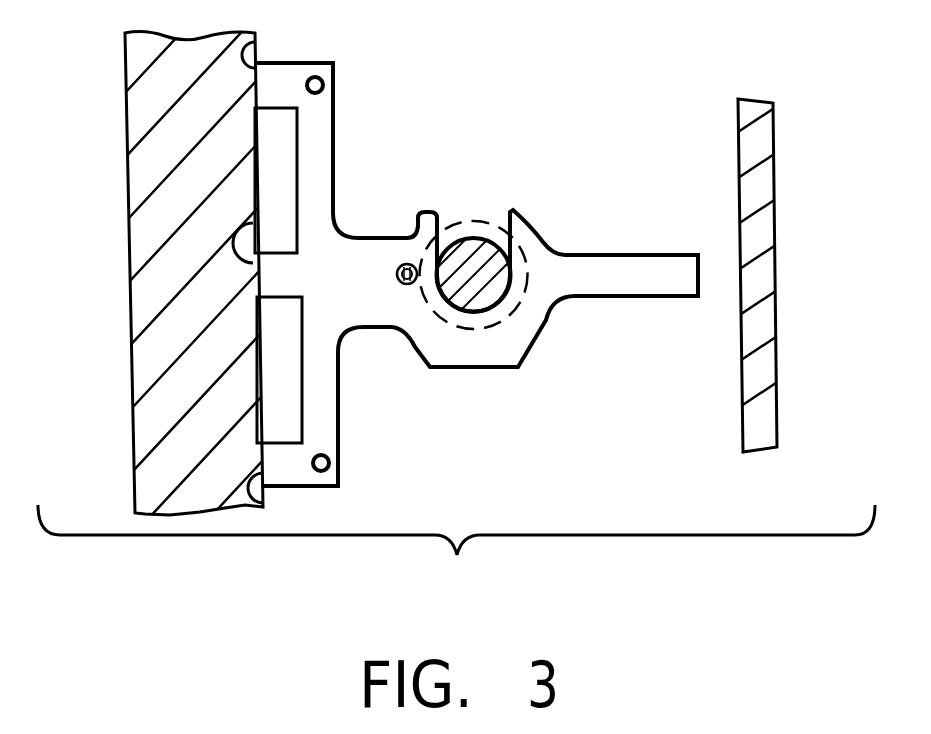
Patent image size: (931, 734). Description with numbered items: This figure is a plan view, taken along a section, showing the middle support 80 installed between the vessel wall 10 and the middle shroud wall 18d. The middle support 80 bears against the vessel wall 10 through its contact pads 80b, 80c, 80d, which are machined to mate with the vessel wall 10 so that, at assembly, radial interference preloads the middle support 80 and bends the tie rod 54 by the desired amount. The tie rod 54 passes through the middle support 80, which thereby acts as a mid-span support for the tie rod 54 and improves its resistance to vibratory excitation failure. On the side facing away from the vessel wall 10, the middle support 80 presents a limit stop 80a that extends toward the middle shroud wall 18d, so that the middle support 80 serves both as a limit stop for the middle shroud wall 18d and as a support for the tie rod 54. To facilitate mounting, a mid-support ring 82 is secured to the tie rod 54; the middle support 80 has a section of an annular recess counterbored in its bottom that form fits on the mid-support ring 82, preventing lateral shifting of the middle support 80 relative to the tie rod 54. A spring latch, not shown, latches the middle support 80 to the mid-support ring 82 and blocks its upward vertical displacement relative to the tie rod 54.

The vessel wall 10 is at (123, 313).
The middle support 80 is at (380, 215).
The limit stop 80a is at (703, 270).
The contact pad 80b is at (254, 50).
The contact pad 80c is at (253, 223).
The contact pad 80d is at (267, 503).
The tie rod 54 is at (477, 248).
The mid-support ring 82 is at (518, 308).
The middle shroud wall 18d is at (773, 280).